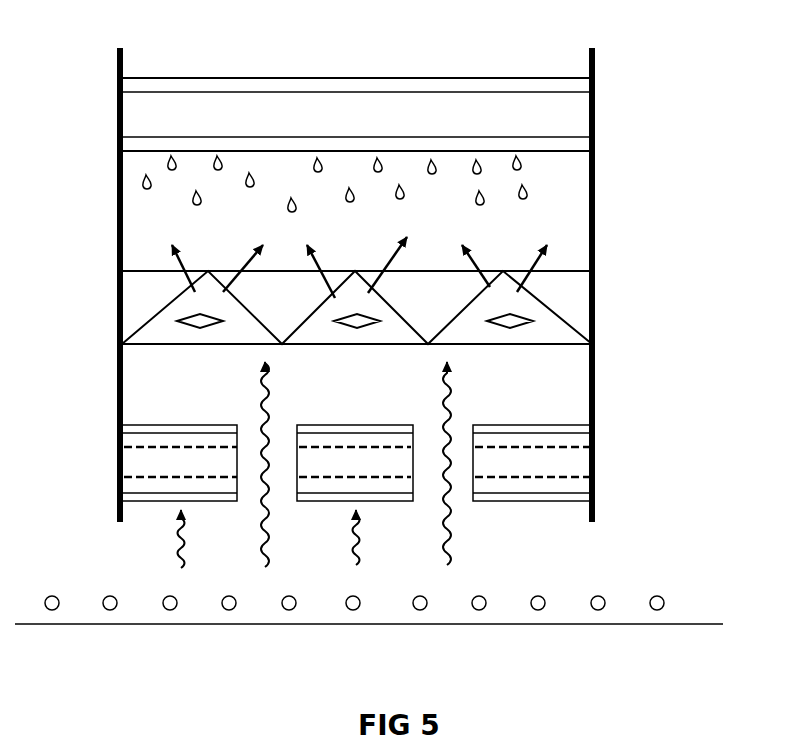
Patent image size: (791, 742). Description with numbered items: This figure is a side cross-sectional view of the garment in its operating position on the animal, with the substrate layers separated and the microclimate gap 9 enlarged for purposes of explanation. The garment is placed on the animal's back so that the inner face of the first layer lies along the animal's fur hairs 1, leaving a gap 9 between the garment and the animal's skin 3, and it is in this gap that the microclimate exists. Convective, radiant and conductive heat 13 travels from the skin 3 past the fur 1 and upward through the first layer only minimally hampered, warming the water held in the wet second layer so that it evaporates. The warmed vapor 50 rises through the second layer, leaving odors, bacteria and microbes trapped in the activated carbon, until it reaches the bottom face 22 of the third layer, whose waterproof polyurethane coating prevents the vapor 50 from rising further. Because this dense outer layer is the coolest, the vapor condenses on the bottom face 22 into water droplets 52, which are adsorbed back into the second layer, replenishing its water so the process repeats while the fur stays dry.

The fur hairs 1 is at (290, 608).
The animal's skin 3 is at (560, 625).
The gap 9 is at (530, 553).
The heat 13 is at (176, 546).
The bottom face 22 is at (568, 151).
The warmed vapor 50 is at (470, 262).
The water droplets 52 is at (253, 181).